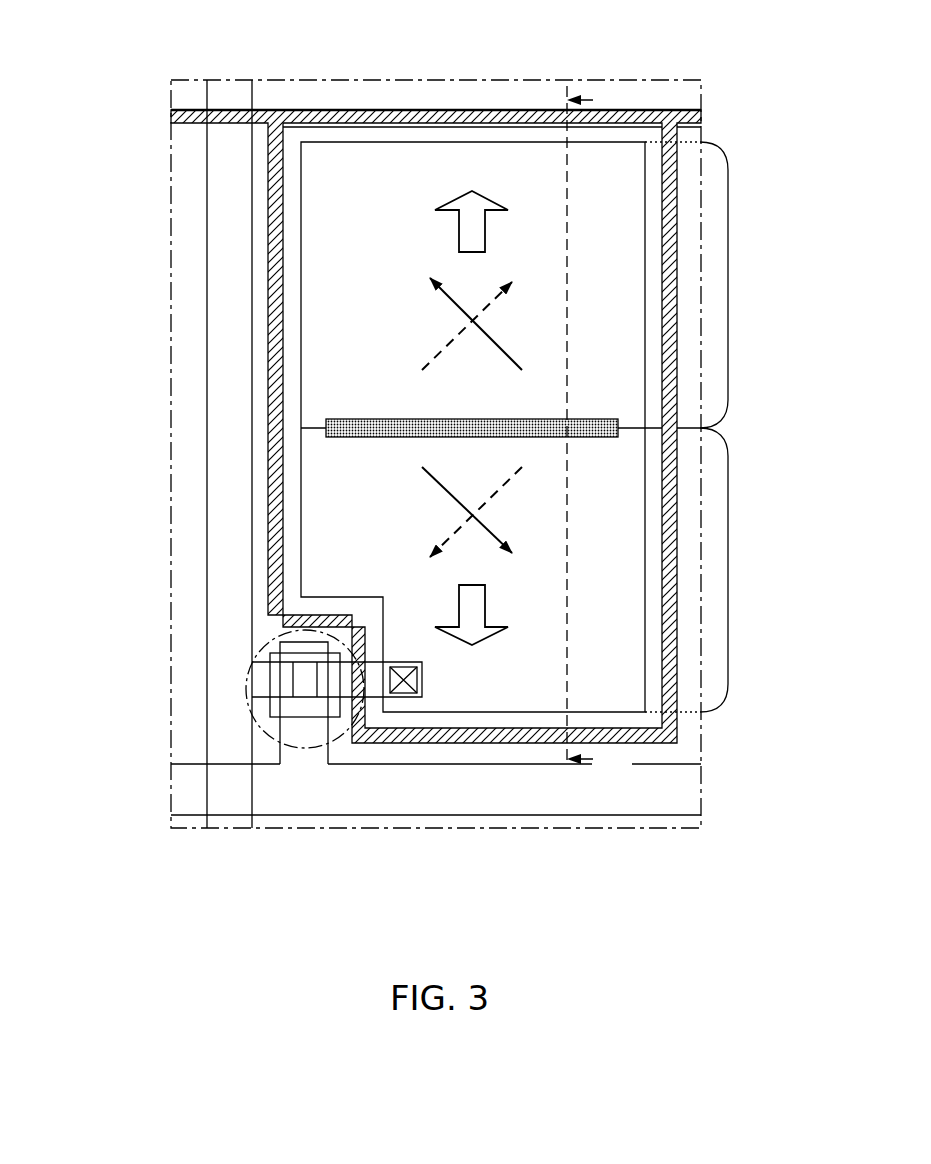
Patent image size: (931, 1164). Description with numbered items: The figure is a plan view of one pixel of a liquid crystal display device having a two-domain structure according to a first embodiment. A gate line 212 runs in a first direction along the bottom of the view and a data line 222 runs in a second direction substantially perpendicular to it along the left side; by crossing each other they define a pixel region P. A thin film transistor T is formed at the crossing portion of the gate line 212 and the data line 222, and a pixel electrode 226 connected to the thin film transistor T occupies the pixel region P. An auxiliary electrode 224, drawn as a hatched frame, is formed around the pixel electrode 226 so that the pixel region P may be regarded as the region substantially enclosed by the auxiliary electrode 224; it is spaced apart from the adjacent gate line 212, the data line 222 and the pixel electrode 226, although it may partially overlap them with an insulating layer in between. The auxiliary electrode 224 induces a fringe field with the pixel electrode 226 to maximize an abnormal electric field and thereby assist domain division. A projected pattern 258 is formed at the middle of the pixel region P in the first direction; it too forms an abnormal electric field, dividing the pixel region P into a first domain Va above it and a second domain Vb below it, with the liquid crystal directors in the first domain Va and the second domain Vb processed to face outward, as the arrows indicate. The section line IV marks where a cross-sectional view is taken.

The gate line 212 is at (426, 790).
The data line 222 is at (243, 470).
The auxiliary electrode 224 is at (346, 110).
The pixel electrode 226 is at (302, 260).
The projected pattern 258 is at (594, 438).
The pixel region P is at (298, 340).
The thin film transistor T is at (303, 748).
The first domain Va is at (718, 285).
The second domain Vb is at (718, 570).
The section line IV- IV is at (598, 429).